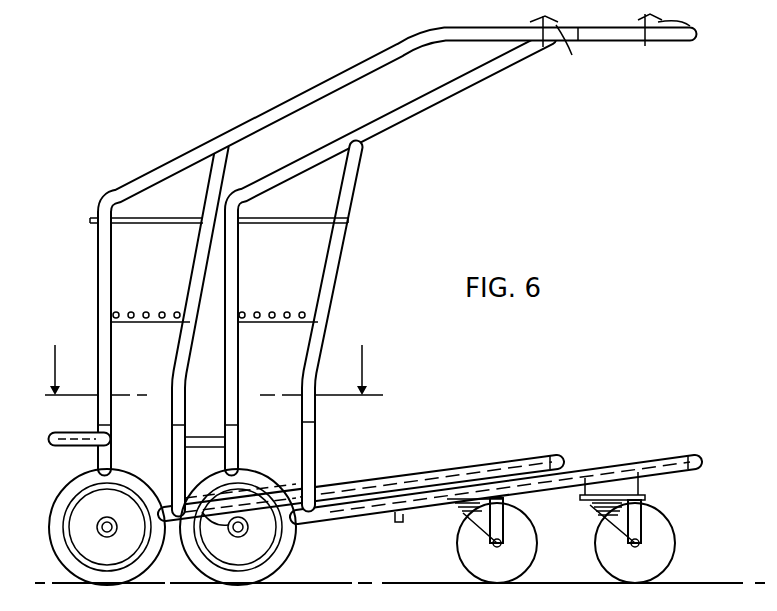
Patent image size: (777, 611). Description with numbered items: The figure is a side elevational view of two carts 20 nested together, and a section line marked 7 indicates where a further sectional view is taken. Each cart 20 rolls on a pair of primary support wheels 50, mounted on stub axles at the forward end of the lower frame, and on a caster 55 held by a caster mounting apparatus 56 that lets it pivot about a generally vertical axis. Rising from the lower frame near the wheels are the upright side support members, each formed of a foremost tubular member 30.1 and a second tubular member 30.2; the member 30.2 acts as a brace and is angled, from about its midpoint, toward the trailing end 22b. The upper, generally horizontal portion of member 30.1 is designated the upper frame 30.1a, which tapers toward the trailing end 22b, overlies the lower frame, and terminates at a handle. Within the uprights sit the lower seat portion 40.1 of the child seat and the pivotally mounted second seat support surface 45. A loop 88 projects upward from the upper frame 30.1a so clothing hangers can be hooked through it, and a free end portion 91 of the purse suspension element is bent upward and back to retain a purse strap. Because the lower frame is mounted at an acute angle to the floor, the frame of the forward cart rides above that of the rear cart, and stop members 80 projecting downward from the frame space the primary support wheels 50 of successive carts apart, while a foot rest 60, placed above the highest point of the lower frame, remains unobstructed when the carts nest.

The cart 20 is at (420, 220).
The tubular member 30.1 is at (238, 263).
The upper frame 30.1a is at (337, 79).
The second tubular member 30.2 is at (197, 254).
The lower seat portion 40.1 is at (162, 311).
The second seat support surface 45 is at (168, 219).
The primary support wheels 50 is at (62, 558).
The caster 55 is at (460, 560).
The caster mounting apparatus 56 is at (462, 512).
The foot rest 60 is at (253, 422).
The stop members 80 is at (213, 520).
The loop 88 is at (543, 48).
The free end portion 91 is at (567, 47).
The trailing end 22b is at (558, 452).
The section line of FIG. 7 is at (214, 357).